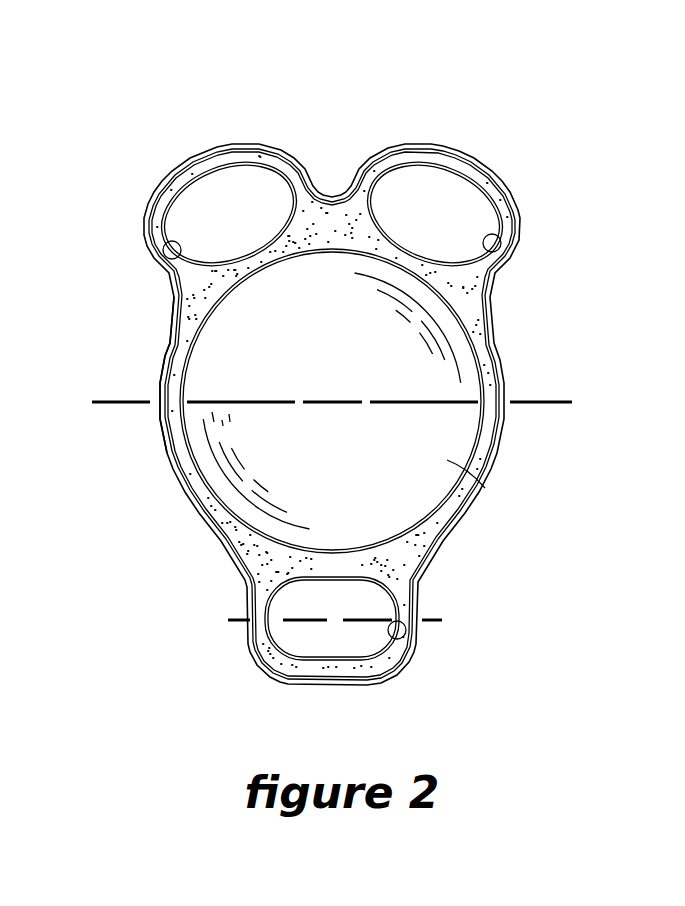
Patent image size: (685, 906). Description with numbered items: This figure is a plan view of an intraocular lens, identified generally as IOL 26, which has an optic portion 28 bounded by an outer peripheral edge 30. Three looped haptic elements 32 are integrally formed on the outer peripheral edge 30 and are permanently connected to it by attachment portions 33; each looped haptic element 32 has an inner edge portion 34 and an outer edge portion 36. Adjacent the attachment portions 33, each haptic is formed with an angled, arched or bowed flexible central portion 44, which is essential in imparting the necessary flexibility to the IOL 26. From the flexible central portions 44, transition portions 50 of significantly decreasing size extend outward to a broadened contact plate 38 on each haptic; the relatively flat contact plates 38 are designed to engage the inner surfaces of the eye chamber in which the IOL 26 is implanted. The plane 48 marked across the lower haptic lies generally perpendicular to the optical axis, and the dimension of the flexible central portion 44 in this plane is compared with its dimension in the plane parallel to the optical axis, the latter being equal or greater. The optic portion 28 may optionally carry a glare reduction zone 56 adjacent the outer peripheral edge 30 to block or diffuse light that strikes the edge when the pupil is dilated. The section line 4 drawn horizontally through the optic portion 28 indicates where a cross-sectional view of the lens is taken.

The IOL 26 is at (505, 315).
The optic portion 28 is at (448, 492).
The outer peripheral edge 30 is at (168, 357).
The looped haptic element 32 is at (256, 146).
The attachment portion 33 is at (184, 287).
The inner edge portion 34 is at (162, 250).
The outer edge portion 36 is at (170, 167).
The contact plate 38 is at (192, 157).
The flexible central portion 44 is at (288, 163).
The plane 48- 48 is at (335, 622).
The transition portion 50 is at (141, 181).
The glare reduction zone 56 is at (472, 465).
The section line 4- 4 is at (331, 403).